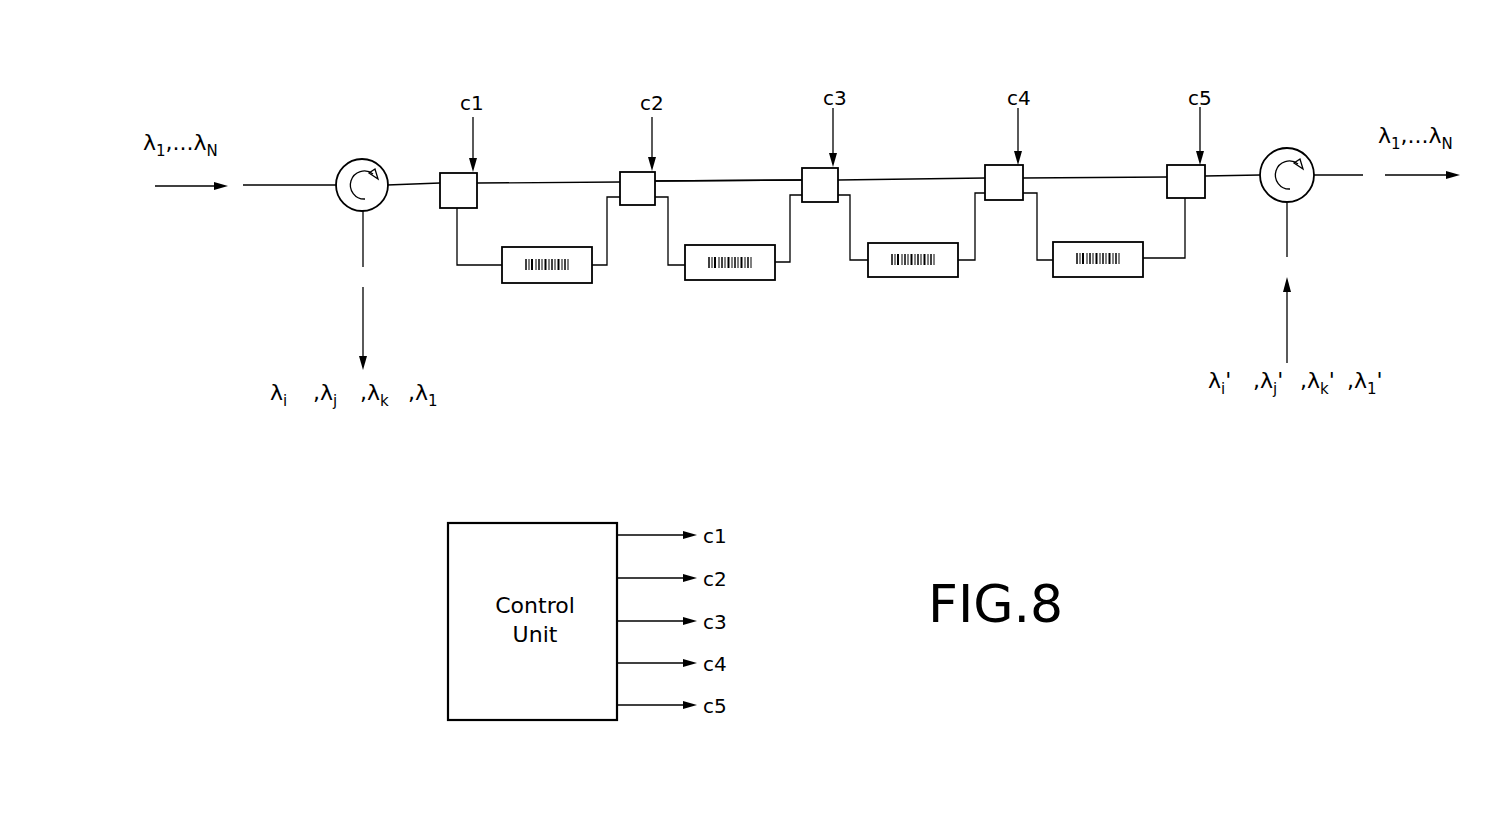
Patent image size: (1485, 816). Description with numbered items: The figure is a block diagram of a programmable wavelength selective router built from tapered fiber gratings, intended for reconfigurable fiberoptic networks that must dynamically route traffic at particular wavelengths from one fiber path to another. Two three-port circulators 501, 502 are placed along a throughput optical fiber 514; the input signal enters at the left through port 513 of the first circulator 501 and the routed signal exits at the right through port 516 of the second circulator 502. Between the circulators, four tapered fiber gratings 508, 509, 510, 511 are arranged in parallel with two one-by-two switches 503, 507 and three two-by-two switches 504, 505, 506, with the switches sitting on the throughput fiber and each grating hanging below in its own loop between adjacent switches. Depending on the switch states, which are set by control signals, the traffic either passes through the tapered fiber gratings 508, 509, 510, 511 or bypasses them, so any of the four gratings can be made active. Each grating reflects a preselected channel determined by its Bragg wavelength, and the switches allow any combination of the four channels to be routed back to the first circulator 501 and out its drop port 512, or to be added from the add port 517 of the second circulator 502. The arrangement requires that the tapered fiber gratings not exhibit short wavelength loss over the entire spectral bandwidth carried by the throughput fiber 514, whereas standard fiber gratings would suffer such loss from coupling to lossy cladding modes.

The three port circulator 501 is at (347, 160).
The three port circulator 502 is at (1277, 147).
The 1:2 switch 503 is at (432, 168).
The 2:2 switch 504 is at (623, 170).
The 2:2 switch 505 is at (812, 167).
The 2:2 switch 506 is at (993, 165).
The 1:2 switch 507 is at (1173, 163).
The tapered fiber grating 508 is at (540, 283).
The tapered fiber grating 509 is at (717, 280).
The tapered fiber grating 510 is at (900, 277).
The tapered fiber grating 511 is at (1083, 277).
The drop port 512 is at (363, 243).
The input port 513 is at (285, 185).
The throughput optical fiber 514 is at (727, 178).
The output port 516 is at (1337, 175).
The add port 517 is at (1287, 233).